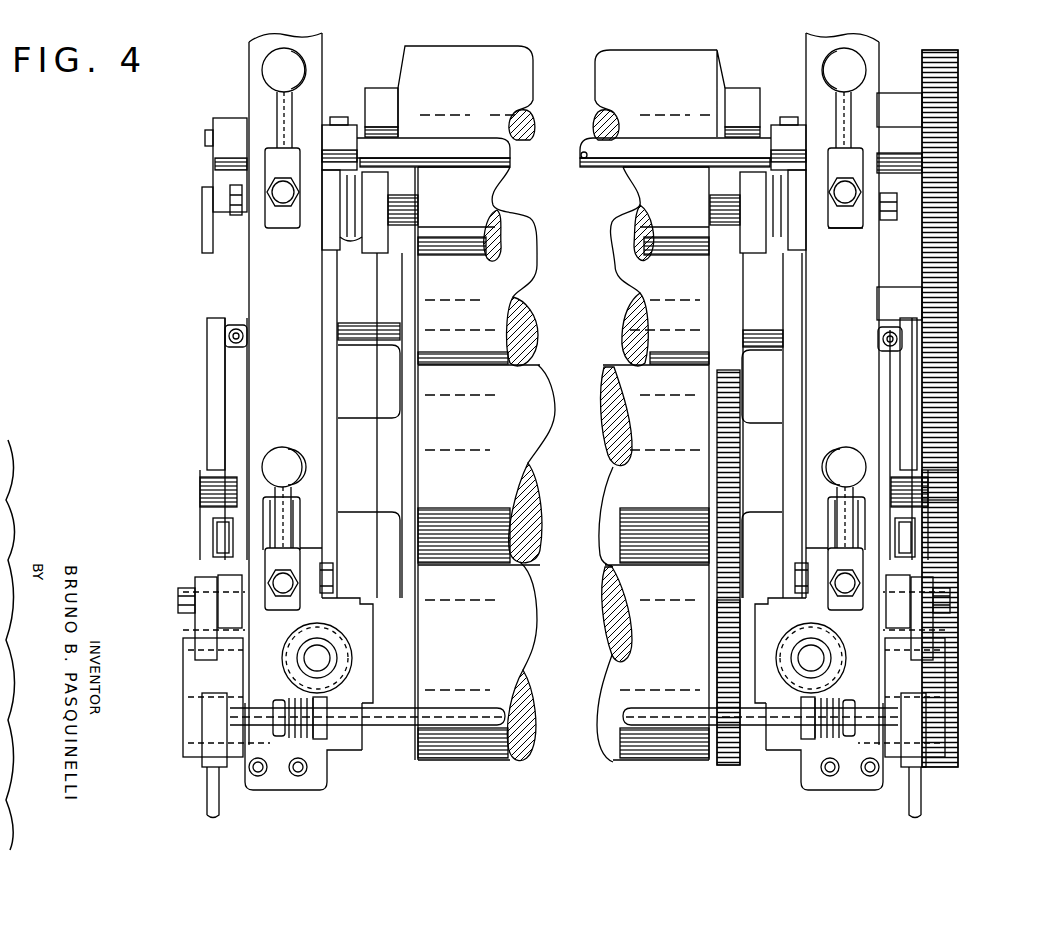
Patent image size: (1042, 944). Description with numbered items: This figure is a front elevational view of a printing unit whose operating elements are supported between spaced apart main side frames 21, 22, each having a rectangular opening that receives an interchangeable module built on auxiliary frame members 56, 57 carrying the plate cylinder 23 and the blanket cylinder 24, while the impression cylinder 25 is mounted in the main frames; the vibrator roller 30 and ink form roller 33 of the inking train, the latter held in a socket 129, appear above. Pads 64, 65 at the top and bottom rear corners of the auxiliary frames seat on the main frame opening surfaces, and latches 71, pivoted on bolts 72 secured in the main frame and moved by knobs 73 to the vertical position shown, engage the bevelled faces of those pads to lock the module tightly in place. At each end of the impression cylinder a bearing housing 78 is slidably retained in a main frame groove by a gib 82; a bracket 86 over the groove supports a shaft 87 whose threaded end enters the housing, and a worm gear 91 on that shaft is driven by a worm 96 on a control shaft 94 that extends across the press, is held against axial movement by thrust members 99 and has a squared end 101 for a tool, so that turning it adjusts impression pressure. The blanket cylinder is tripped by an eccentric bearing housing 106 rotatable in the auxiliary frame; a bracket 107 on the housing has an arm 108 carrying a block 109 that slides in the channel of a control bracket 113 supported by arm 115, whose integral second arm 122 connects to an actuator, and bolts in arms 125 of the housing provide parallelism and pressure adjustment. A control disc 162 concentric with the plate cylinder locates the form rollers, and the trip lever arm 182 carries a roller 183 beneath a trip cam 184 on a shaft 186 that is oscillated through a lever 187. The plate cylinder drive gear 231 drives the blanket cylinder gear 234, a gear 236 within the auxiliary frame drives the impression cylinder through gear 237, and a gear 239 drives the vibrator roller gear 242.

The main side frame 21 is at (315, 50).
The main side frame 22 is at (805, 61).
The plate cylinder 23 is at (647, 278).
The blanket cylinder 24 is at (647, 453).
The impression cylinder 25 is at (640, 632).
The vibrator roller 30 is at (620, 65).
The ink form roller 33 is at (627, 190).
The auxiliary frame member 56 is at (258, 296).
The auxiliary frame member 57 is at (857, 392).
The pad 64 is at (866, 230).
The pad 65 is at (302, 557).
The latch 71 is at (280, 165).
The bolt 72 is at (284, 194).
The knob 73 is at (268, 65).
The bearing housing 78 is at (345, 613).
The gib 82 is at (323, 583).
The bracket 86 is at (283, 777).
The shaft 87 is at (322, 658).
The worm gear 91 is at (292, 660).
The control shaft 94 is at (472, 717).
The worm 96 is at (790, 735).
The thrust member 99 is at (280, 737).
The squared end 101 is at (213, 708).
The eccentric bearing housing 106 is at (322, 735).
The bracket 107 is at (222, 408).
The arm 108 is at (975, 516).
The block 109 is at (975, 549).
The control bracket 113 is at (972, 605).
The arm 115 is at (972, 638).
The second arm 122 is at (965, 719).
The arm 125 is at (238, 372).
The socket 129 is at (376, 208).
The control disc 162 is at (787, 373).
The arm 182 is at (330, 292).
The roller 183 is at (326, 238).
The trip cam 184 is at (333, 190).
The shaft 186 is at (450, 148).
The lever 187 is at (218, 200).
The drive gear 231 is at (940, 275).
The gear 234 is at (932, 485).
The gear 236 is at (728, 477).
The gear 237 is at (728, 627).
The gear 239 is at (957, 194).
The gear 242 is at (950, 92).